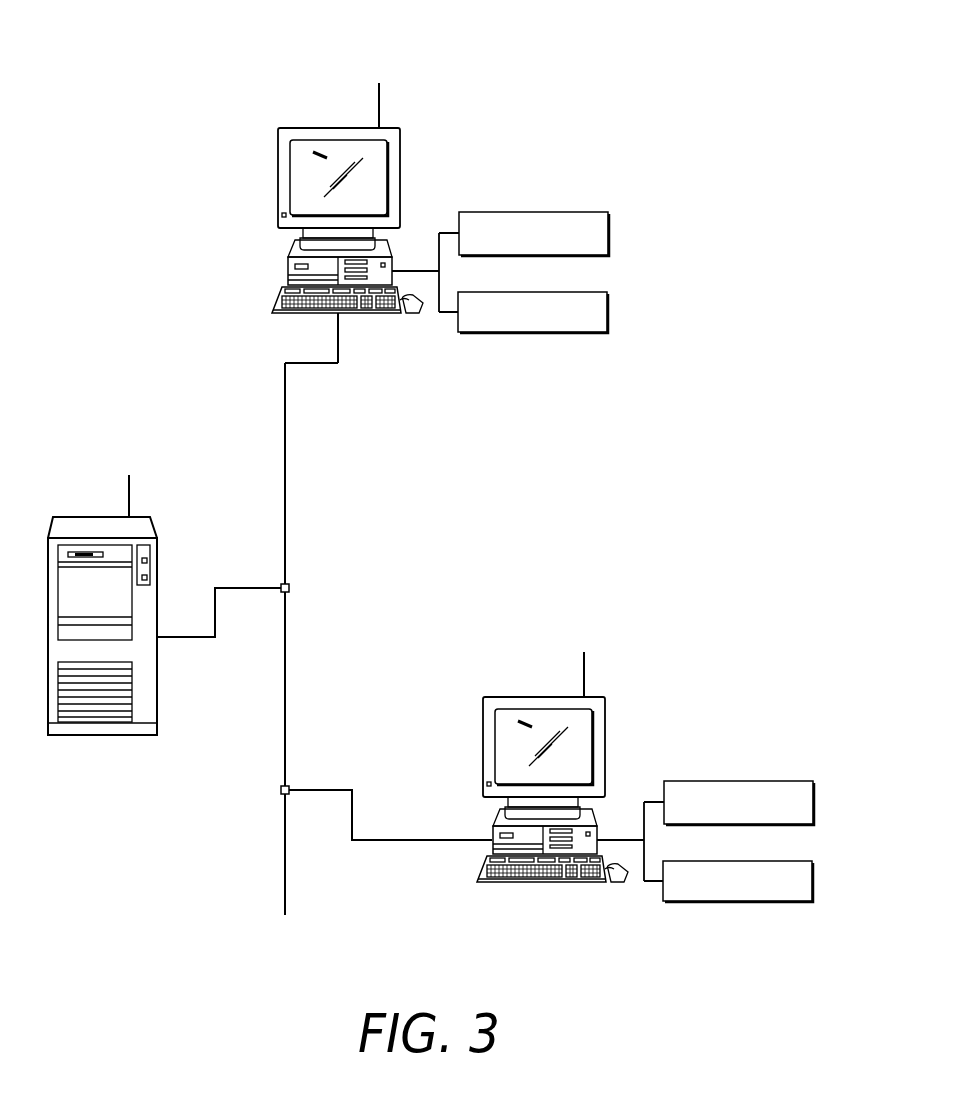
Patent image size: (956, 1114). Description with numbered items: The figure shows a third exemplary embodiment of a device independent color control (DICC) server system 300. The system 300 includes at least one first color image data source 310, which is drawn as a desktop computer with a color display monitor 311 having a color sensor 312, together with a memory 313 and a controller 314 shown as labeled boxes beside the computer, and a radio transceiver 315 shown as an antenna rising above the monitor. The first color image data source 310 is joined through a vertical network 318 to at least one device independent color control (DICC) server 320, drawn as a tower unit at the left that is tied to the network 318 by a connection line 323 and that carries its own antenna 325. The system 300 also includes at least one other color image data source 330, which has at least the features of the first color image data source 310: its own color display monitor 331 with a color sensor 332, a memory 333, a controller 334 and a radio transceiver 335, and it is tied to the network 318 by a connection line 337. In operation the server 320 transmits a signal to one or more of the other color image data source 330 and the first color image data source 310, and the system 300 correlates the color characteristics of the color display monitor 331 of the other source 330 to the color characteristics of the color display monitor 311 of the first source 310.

The device independent color control server system 300 is at (663, 63).
The first color image data source 310 is at (400, 180).
The color display monitor 311 is at (313, 153).
The color sensor 312 is at (292, 197).
The memory 313 is at (532, 332).
The controller 314 is at (532, 212).
The radio transceiver 315 is at (379, 112).
The network 318 is at (285, 467).
The device independent color control server 320 is at (105, 730).
The connection line 323 is at (240, 588).
The antenna 325 is at (131, 500).
The other color image data source 330 is at (577, 789).
The color display monitor 331 is at (467, 738).
The display screen 332 is at (497, 753).
The memory 333 is at (738, 908).
The controller 334 is at (739, 776).
The antenna 335 is at (620, 662).
The connection line 337 is at (380, 840).